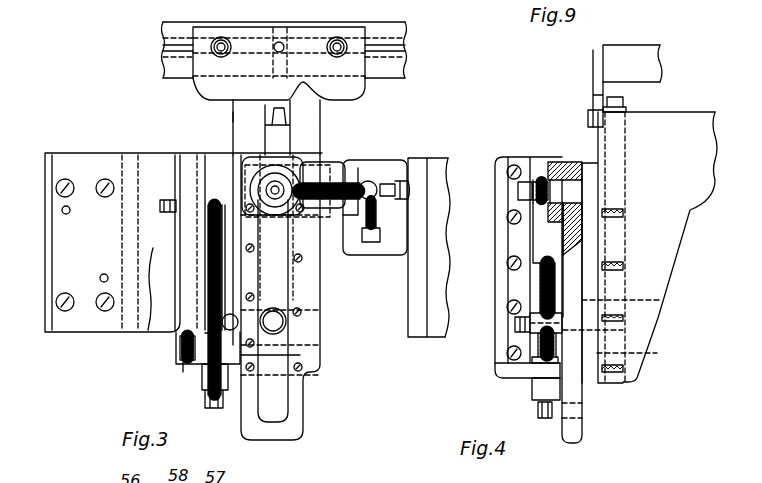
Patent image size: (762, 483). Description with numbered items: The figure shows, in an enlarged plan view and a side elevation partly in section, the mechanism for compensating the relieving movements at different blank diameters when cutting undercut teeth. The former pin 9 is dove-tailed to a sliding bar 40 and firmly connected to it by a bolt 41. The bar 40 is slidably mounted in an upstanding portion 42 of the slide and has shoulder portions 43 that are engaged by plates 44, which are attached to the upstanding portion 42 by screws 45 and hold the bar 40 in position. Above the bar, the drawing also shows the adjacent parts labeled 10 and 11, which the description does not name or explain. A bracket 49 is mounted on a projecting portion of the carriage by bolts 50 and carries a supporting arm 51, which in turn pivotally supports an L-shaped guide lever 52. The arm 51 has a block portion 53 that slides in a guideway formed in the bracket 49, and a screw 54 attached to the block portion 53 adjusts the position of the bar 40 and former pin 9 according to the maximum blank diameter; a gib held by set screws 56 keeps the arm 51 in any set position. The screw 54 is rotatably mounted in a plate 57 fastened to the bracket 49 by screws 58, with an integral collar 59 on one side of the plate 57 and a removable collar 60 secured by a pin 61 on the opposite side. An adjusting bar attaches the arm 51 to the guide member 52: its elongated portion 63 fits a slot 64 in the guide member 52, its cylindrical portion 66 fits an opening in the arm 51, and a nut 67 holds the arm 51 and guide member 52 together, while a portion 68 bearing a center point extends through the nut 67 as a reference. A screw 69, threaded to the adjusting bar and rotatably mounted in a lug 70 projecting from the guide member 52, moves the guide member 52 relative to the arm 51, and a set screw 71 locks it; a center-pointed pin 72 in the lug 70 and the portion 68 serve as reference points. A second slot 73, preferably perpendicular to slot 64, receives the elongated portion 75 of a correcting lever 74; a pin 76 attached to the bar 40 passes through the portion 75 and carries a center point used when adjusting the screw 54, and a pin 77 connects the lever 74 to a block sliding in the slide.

In FIG. 3, the former pin 9 is at (283, 112).
In FIG. 4, the former pin 9 is at (590, 115).
In FIG. 3, the bracket 10 is at (365, 86).
In FIG. 4, the bracket 10 is at (593, 63).
In FIG. 3, the rail 11 is at (408, 30).
In FIG. 4, the rail 11 is at (662, 57).
In FIG. 3, the sliding bar 40 is at (283, 132).
In FIG. 4, the bolt 41 is at (623, 100).
In FIG. 4, the upstanding portion 42 is at (683, 112).
In FIG. 3, the shoulder portions 43 is at (233, 112).
In FIG. 3, the plates 44 is at (295, 358).
In FIG. 4, the plates 44 is at (600, 383).
In FIG. 3, the screws 45 is at (300, 372).
In FIG. 4, the screws 45 is at (612, 383).
In FIG. 3, the bracket 49 is at (85, 332).
In FIG. 3, the bolts 50 is at (58, 300).
In FIG. 4, the bolts 50 is at (514, 262).
In FIG. 3, the supporting arm 51 is at (258, 158).
In FIG. 4, the supporting arm 51 is at (560, 157).
In FIG. 3, the L-shaped guide lever 52 is at (303, 426).
In FIG. 4, the L-shaped guide lever 52 is at (575, 445).
In FIG. 3, the block portion 53 is at (225, 255).
In FIG. 4, the block portion 53 is at (535, 250).
In FIG. 3, the screw 54 is at (222, 287).
In FIG. 4, the screw 54 is at (540, 287).
In FIG. 3, the set screws 56 is at (168, 212).
In FIG. 3, the plate 57 is at (175, 368).
In FIG. 4, the plate 57 is at (493, 372).
In FIG. 3, the screws 58 is at (182, 372).
In FIG. 3, the collar 59 is at (178, 350).
In FIG. 4, the collar 59 is at (533, 360).
In FIG. 3, the removable collar 60 is at (228, 380).
In FIG. 4, the removable collar 60 is at (533, 393).
In FIG. 3, the pin 61 is at (208, 392).
In FIG. 3, the elongated portion 63 is at (328, 182).
In FIG. 3, the slot 64 is at (345, 168).
In FIG. 4, the cylindrical portion 66 is at (548, 176).
In FIG. 4, the nut 67 is at (530, 188).
In FIG. 3, the portion 68 is at (265, 168).
In FIG. 4, the portion 68 is at (517, 173).
In FIG. 3, the screw 69 is at (369, 180).
In FIG. 3, the lug 70 is at (407, 162).
In FIG. 3, the set screw 71 is at (376, 242).
In FIG. 3, the pin 72 is at (383, 167).
In FIG. 3, the second slot 73 is at (280, 405).
In FIG. 3, the correcting lever 74 is at (210, 337).
In FIG. 3, the elongated portion 75 is at (282, 322).
In FIG. 3, the pin 76 is at (238, 320).
In FIG. 4, the pin 76 is at (515, 323).
In FIG. 3, the pin 77 is at (210, 328).